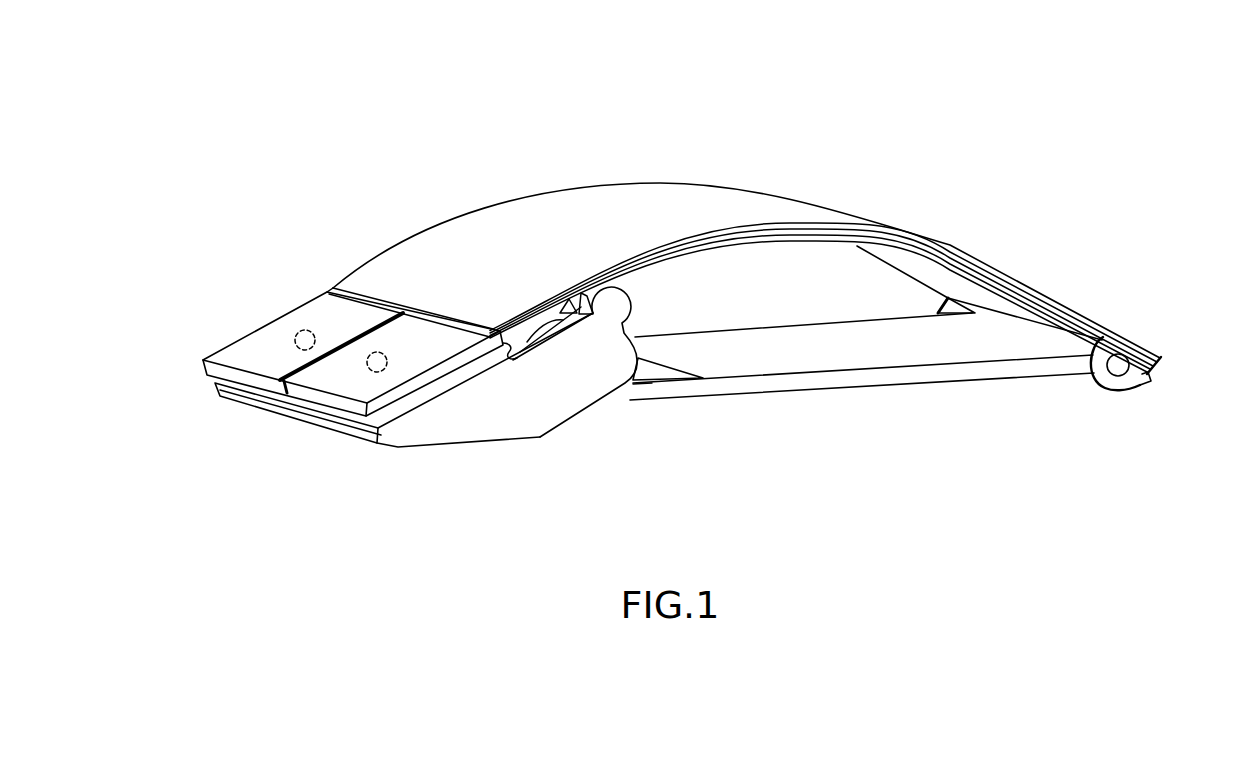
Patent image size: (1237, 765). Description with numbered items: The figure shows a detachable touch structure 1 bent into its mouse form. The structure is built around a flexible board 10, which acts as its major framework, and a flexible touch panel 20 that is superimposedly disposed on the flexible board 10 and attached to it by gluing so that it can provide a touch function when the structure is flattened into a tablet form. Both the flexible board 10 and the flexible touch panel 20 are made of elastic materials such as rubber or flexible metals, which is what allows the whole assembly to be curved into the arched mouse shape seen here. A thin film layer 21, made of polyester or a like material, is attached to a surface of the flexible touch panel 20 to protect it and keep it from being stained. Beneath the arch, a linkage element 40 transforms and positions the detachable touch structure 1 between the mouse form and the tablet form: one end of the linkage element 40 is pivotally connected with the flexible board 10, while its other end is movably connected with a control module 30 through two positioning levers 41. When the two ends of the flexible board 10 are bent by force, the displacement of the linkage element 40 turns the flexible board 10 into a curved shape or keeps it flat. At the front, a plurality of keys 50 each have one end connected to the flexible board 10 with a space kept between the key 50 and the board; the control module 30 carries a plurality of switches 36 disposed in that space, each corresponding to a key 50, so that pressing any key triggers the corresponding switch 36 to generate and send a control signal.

The detachable touch structure 1 is at (262, 120).
The flexible board 10 is at (1118, 381).
The flexible touch panel 20 is at (1153, 367).
The thin film layer 21 is at (682, 200).
The control module 30 is at (474, 420).
The switch 36 is at (298, 342).
The linkage element 40 is at (958, 375).
The positioning lever 41 is at (635, 395).
The key 50 is at (327, 307).